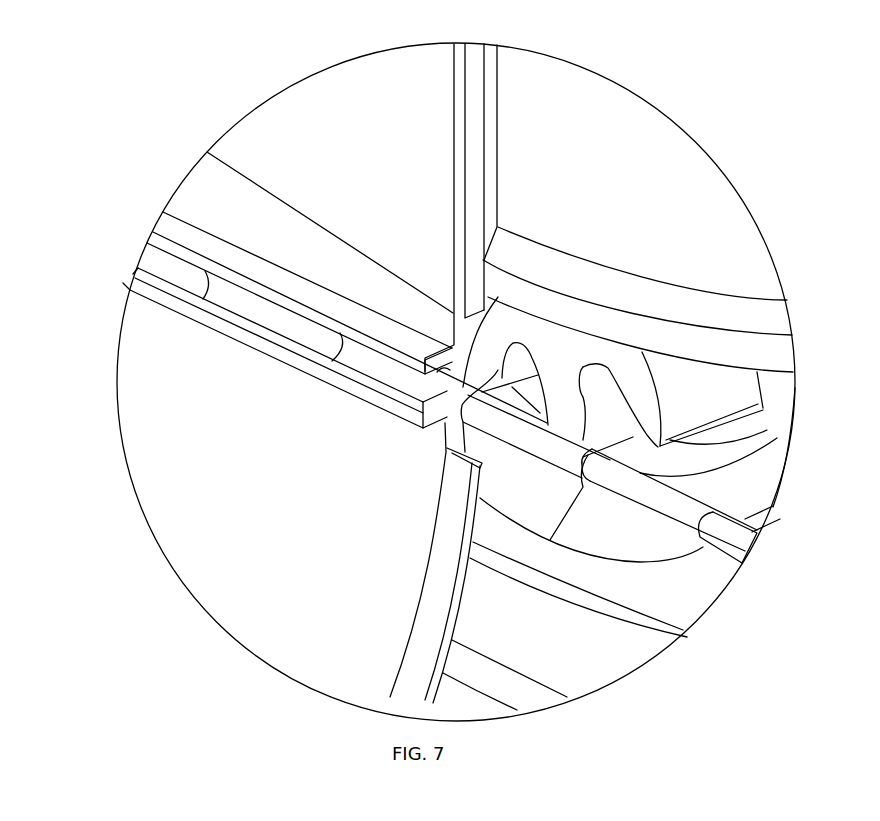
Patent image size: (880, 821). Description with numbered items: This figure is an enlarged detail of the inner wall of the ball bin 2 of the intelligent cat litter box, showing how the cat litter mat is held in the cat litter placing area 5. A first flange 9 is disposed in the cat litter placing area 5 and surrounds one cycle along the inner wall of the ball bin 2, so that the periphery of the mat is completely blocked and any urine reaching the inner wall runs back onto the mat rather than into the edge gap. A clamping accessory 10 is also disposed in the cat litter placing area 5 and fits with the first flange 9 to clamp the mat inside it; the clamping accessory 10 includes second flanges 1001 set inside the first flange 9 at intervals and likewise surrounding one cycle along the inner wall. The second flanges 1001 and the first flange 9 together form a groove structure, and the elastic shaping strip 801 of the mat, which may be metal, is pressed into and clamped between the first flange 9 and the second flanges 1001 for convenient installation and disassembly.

The ball bin 2 is at (220, 168).
The first flange 9 is at (205, 238).
The clamping accessory 10 is at (178, 313).
The second flanges 1001 is at (138, 282).
The cat litter placing area 5 is at (180, 433).
The elastic shaping strip 801 is at (680, 510).